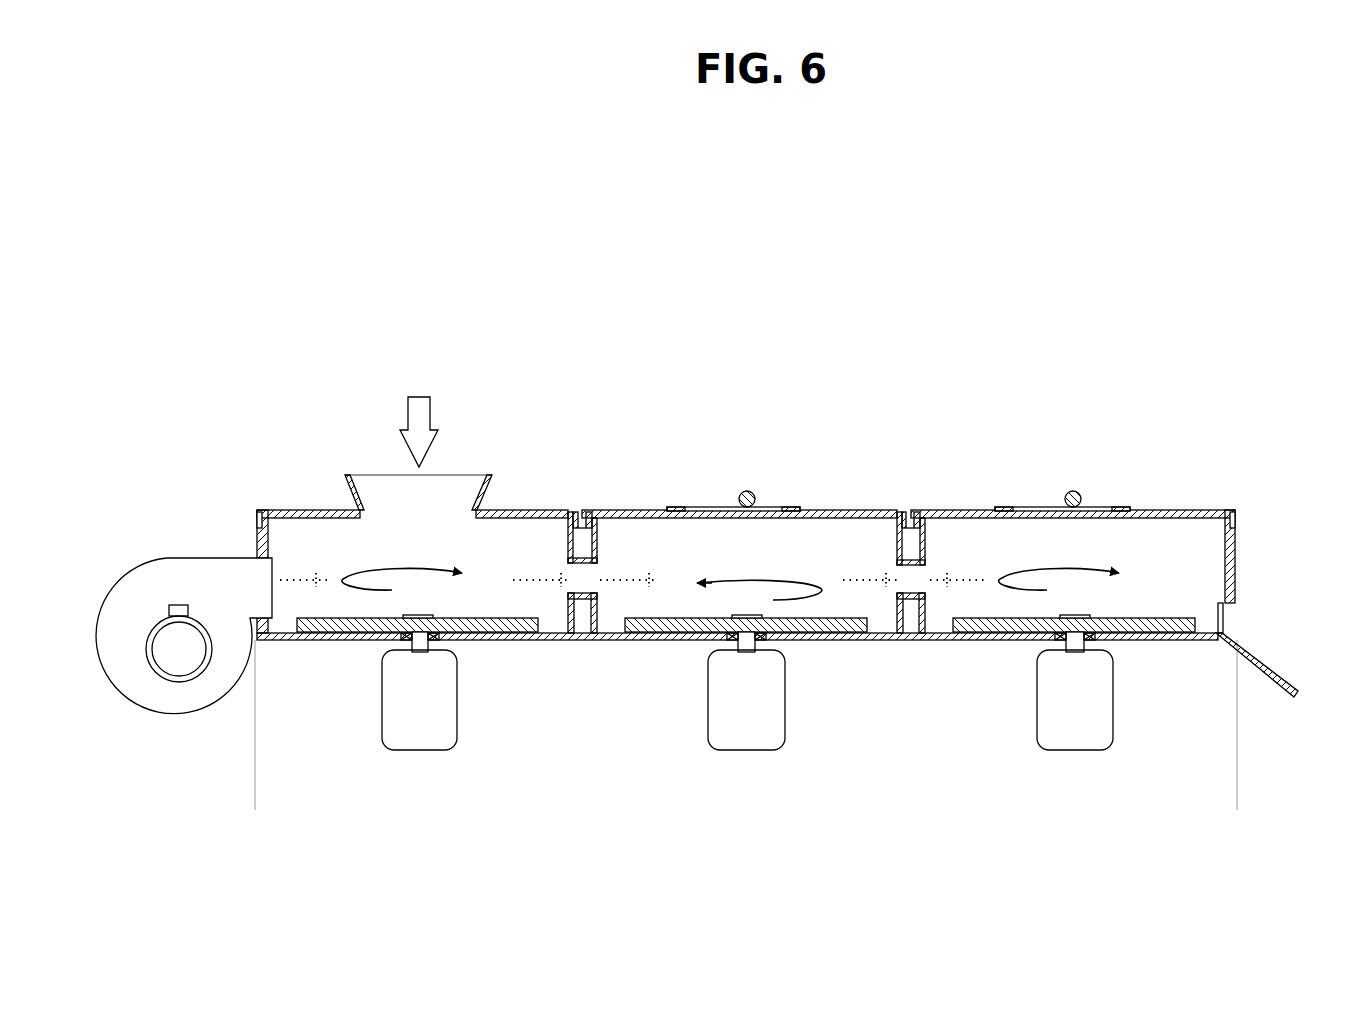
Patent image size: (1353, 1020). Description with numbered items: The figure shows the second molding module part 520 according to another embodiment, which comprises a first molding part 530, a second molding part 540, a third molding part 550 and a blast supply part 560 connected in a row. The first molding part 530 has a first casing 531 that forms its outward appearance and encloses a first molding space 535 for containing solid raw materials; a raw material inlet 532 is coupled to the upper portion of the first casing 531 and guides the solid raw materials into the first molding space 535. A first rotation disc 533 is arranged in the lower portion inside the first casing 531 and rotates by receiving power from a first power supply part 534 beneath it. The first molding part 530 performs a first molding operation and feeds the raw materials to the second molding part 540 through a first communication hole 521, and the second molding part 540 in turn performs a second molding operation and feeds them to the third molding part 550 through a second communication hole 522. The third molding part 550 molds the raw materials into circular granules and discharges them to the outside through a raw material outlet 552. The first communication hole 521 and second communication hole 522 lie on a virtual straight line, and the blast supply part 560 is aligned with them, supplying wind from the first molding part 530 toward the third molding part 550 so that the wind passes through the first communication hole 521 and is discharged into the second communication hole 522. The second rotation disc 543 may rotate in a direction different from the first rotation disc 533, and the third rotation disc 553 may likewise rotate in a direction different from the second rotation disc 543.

The second molding module part 520 is at (792, 376).
The first communication hole 521 is at (586, 585).
The second communication hole 522 is at (913, 583).
The first molding part 530 is at (562, 504).
The first casing 531 is at (283, 510).
The raw material inlet 532 is at (356, 490).
The first rotation disc 533 is at (503, 618).
The first power supply part 534 is at (425, 735).
The first molding space 535 is at (530, 542).
The second molding part 540 is at (864, 504).
The second rotation disc 543 is at (830, 618).
The third molding part 550 is at (1199, 504).
The raw material outlet 552 is at (1222, 615).
The third rotation disc 553 is at (1160, 618).
The blast supply part 560 is at (193, 567).